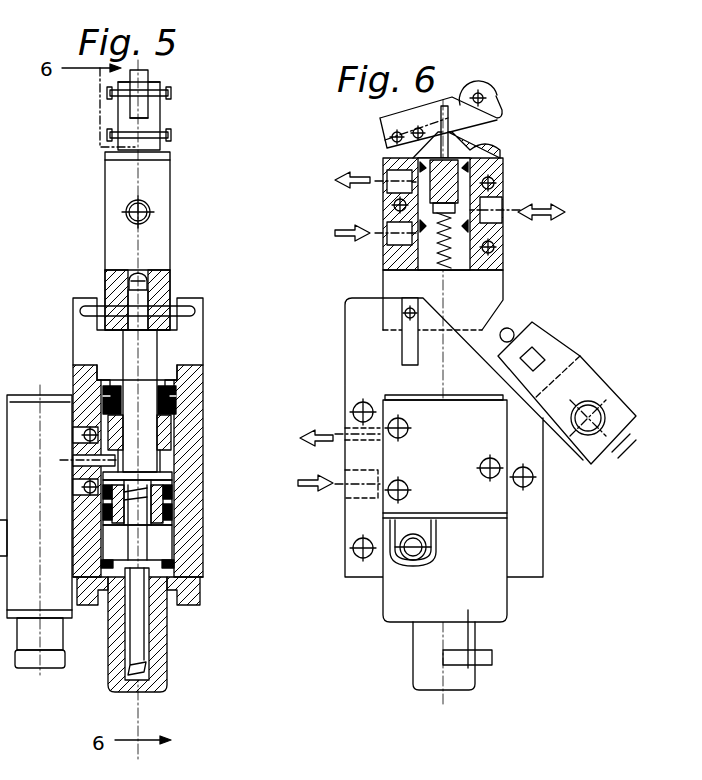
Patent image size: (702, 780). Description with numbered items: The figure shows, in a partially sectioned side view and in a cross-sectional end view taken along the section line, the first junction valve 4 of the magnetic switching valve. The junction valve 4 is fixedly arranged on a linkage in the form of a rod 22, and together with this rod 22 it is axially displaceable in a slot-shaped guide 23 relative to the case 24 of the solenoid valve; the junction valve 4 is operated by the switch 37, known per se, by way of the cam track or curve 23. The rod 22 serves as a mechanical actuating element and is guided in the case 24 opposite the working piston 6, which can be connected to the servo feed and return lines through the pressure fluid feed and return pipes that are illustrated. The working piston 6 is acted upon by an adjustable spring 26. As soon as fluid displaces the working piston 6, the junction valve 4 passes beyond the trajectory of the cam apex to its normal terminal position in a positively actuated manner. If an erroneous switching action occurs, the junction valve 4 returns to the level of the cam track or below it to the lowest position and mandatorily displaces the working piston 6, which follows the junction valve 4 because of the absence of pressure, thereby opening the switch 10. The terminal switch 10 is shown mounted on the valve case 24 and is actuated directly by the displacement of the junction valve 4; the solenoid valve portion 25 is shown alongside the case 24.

In FIG. 5, the valve body 4 is at (166, 190).
In FIG. 6, the valve body 4 is at (492, 197).
In FIG. 5, the piston 6 is at (170, 503).
In FIG. 6, the limit switch 10 is at (535, 342).
In FIG. 5, the piston rod 22 is at (148, 358).
In FIG. 5, the frame 23 is at (197, 327).
In FIG. 6, the frame 23 is at (403, 330).
In FIG. 5, the cylinder housing 24 is at (203, 458).
In FIG. 6, the cylinder housing 24 is at (357, 522).
In FIG. 5, the solenoid valve 25 is at (30, 412).
In FIG. 5, the cylinder chamber 26 is at (163, 542).
In FIG. 5, the roller 37 is at (165, 97).
In FIG. 6, the roller 37 is at (497, 101).